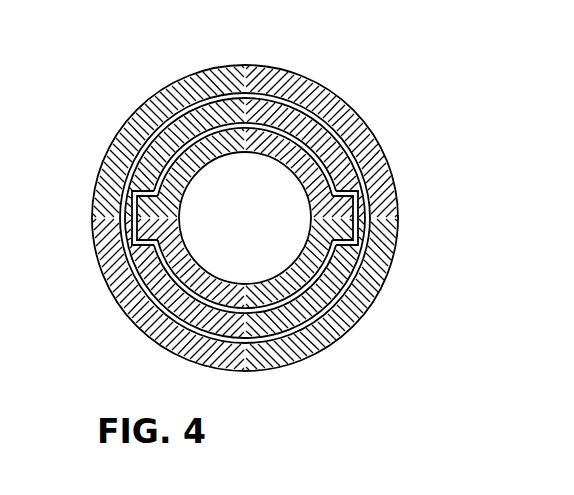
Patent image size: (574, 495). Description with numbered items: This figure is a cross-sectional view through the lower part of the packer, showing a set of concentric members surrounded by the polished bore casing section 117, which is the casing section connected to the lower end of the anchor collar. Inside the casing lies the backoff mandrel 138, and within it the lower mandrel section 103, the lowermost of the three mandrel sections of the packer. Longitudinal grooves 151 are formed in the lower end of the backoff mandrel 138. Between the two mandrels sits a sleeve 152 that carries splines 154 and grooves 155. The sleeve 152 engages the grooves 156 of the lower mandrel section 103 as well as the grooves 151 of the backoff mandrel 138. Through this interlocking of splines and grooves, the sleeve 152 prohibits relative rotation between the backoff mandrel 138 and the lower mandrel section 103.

The lower mandrel section 103 is at (178, 160).
The polished bore casing section 117 is at (345, 108).
The backoff mandrel 138 is at (358, 279).
The longitudinal grooves 151 is at (363, 193).
The sleeve 152 is at (330, 300).
The splines 154 is at (136, 200).
The grooves 155 is at (133, 221).
The grooves 156 is at (146, 232).